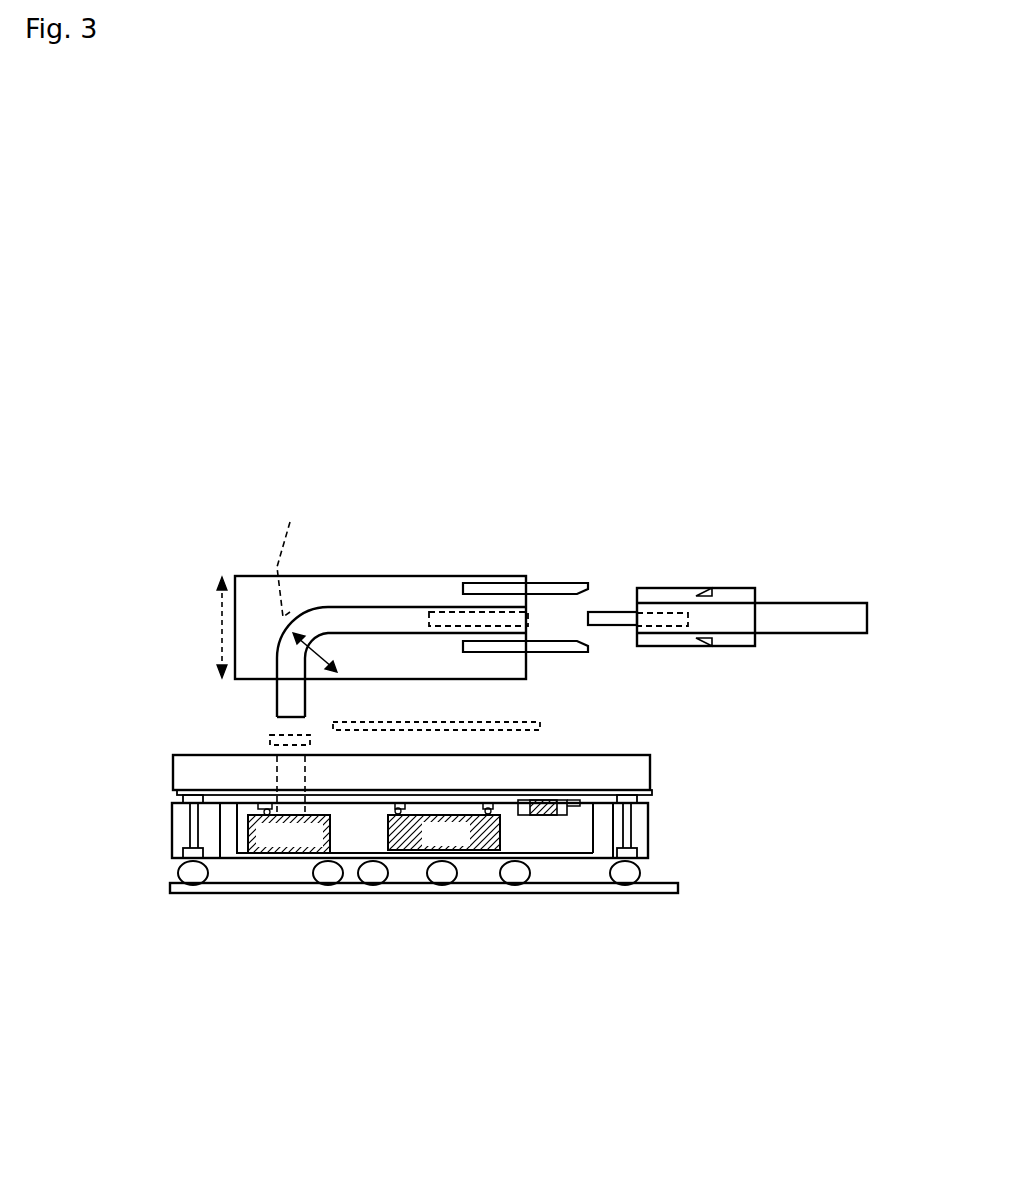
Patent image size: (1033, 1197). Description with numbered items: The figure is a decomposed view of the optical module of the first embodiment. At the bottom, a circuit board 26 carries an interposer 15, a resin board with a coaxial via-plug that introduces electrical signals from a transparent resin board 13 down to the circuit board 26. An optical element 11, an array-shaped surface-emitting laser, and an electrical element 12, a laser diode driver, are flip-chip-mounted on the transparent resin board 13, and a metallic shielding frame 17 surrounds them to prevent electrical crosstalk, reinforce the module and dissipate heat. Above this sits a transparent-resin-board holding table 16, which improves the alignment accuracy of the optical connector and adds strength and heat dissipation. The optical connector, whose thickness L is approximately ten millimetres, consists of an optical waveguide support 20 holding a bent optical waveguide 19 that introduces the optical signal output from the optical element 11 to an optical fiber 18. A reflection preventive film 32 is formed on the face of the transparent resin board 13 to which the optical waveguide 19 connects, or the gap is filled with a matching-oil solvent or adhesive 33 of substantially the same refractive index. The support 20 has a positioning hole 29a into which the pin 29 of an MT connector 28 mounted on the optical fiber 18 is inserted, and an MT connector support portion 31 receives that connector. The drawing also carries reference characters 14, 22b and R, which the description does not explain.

The optical element 11 is at (268, 853).
The electrical element 12 is at (513, 853).
The transparent resin board 13 is at (207, 790).
The solder balls 14 is at (172, 860).
The interposer 15 is at (648, 818).
The transparent-resin-board holding table 16 is at (642, 772).
The metallic shielding frame 17 is at (233, 843).
The optical fiber 18 is at (743, 606).
The optical waveguide 19 is at (327, 607).
The optical waveguide support 20 is at (253, 576).
The optical path 22b is at (302, 654).
The circuit board 26 is at (672, 884).
The MT connector 28 is at (682, 641).
The pin 29 is at (613, 626).
The positioning hole 29a is at (535, 617).
The MT connector support portion 31 is at (542, 583).
The reflection preventive film 32 is at (310, 738).
The solvent or adhesive 33 is at (538, 727).
The thickness of optical connector L is at (212, 627).
The bend radius R is at (315, 650).